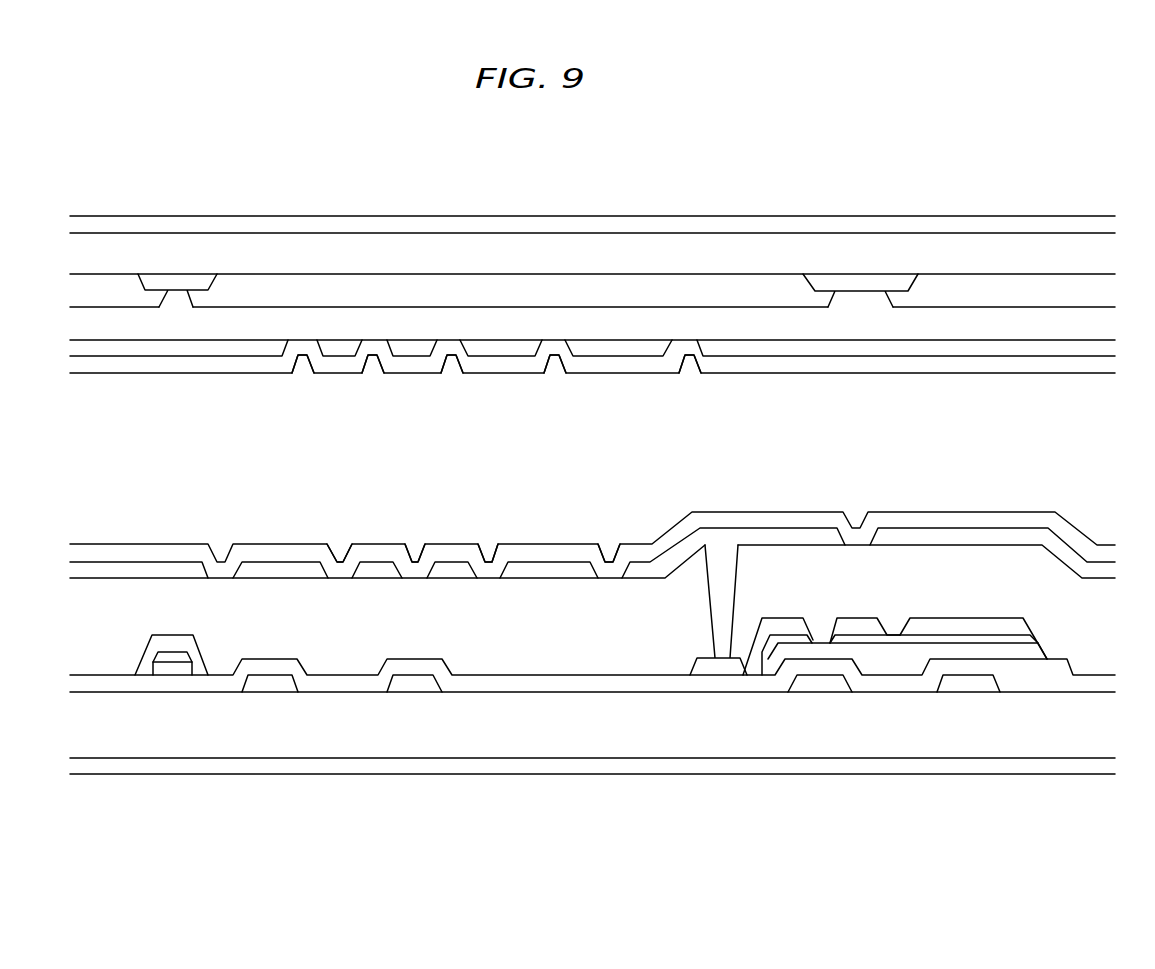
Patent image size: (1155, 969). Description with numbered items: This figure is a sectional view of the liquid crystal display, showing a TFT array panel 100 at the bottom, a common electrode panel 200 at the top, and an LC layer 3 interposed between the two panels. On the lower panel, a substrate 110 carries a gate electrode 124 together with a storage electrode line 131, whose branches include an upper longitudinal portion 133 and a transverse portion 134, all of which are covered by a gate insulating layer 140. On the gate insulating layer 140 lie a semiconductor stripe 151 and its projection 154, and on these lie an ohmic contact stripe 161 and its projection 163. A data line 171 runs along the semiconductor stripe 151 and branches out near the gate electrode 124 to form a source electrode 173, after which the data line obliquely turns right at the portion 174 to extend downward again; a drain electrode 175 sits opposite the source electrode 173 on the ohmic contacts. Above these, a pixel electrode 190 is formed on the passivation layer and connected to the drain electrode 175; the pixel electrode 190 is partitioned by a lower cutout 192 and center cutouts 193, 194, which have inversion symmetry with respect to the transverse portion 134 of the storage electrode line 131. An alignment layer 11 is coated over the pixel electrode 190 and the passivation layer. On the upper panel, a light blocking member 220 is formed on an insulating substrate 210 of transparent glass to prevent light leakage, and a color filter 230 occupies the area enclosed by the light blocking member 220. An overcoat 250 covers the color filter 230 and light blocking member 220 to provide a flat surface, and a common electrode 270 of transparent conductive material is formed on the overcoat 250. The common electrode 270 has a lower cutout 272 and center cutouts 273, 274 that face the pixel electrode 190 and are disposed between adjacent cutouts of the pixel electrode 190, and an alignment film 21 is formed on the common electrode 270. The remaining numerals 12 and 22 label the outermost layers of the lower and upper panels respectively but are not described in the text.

The LC layer 3 is at (822, 441).
The alignment layer 11 is at (100, 545).
The lower polarizer 12 is at (547, 768).
The alignment film 21 is at (238, 362).
The upper polarizer 22 is at (929, 222).
The TFT array panel 100 is at (598, 828).
The substrate 110 is at (488, 737).
The gate electrode 124 is at (813, 687).
The storage electrode line 131 is at (972, 684).
The upper longitudinal portion 133 is at (262, 687).
The transverse portion 134 is at (418, 685).
The gate insulating layer 140 is at (342, 685).
The semiconductor stripe 151 is at (178, 668).
The projection 154 is at (775, 672).
The ohmic contact stripe 161 is at (171, 656).
The projection 163 is at (908, 655).
The data line 171 is at (150, 665).
The source electrode 173 is at (874, 637).
The oblique turn of data line 174 is at (1010, 629).
The drain electrode 175 is at (703, 668).
The pixel electrode 190 is at (147, 567).
The lower cutout 192 is at (610, 555).
The center cutout 193 is at (341, 555).
The center cutout 194 is at (416, 555).
The common electrode panel 200 is at (612, 186).
The insulating substrate 210 is at (197, 243).
The light blocking member 220 is at (158, 278).
The color filter 230 is at (353, 282).
The overcoat 250 is at (470, 315).
The common electrode 270 is at (264, 350).
The lower cutout 272 is at (690, 362).
The center cutout 273 is at (303, 362).
The center cutout 274 is at (373, 362).